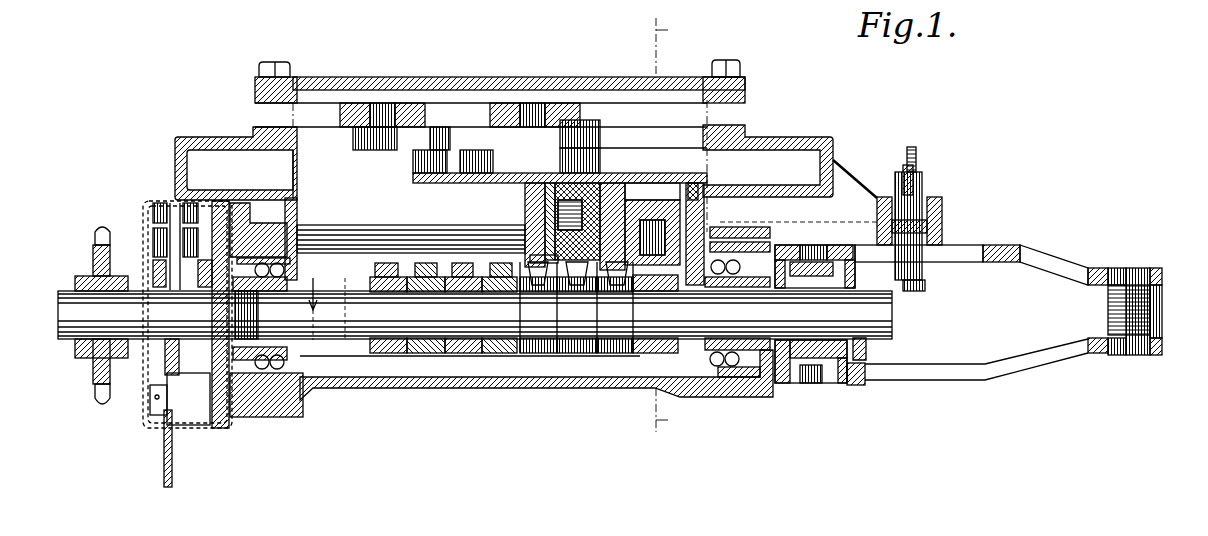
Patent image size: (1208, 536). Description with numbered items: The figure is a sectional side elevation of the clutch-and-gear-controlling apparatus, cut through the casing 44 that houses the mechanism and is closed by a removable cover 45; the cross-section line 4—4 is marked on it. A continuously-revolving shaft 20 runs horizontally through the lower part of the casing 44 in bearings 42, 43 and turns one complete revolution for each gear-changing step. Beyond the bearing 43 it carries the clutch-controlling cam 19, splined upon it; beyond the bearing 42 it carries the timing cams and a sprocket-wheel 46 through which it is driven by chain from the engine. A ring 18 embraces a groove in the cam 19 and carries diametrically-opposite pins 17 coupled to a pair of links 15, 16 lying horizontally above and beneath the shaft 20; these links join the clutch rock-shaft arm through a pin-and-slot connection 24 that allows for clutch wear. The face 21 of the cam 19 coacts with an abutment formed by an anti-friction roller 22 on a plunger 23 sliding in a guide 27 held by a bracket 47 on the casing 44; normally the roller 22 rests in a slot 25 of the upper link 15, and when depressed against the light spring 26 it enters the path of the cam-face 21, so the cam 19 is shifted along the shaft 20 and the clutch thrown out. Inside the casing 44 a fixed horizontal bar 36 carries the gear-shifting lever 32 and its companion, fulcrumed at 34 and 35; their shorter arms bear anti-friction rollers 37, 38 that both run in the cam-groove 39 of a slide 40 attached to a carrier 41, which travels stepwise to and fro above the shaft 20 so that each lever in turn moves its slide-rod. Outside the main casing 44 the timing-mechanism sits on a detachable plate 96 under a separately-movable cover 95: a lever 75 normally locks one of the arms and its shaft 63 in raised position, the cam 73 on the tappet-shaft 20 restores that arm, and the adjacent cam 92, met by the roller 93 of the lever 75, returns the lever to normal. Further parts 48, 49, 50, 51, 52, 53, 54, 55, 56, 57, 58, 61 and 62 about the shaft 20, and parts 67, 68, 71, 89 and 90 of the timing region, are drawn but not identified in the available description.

The section line 4— 4 is at (665, 221).
The link 15 is at (1085, 268).
The link 16 is at (1058, 362).
The pins 17 is at (812, 245).
The ring 18 is at (822, 383).
The clutch-controlling cam 19 is at (855, 380).
The continuously-revolving shaft 20 is at (70, 345).
The cam face 21 is at (868, 341).
The anti-friction roller 22 is at (920, 285).
The plunger 23 is at (912, 205).
The pin-and-slot connection 24 is at (1118, 268).
The slot 25 is at (963, 262).
The spring 26 is at (942, 226).
The guide 27 is at (942, 208).
The gear-shifting lever 32 is at (600, 138).
The fulcrum 34 is at (382, 103).
The fulcrum 35 is at (532, 103).
The fixed horizontal bar 36 is at (481, 137).
The anti-friction roller 37 is at (453, 150).
The anti-friction roller 38 is at (600, 161).
The cam-groove 39 is at (690, 160).
The slide 40 is at (447, 183).
The carrier 41 is at (545, 210).
The bearing 42 is at (282, 395).
The bearing 43 is at (725, 378).
The casing 44 is at (218, 137).
The removable cover 45 is at (463, 77).
The sprocket-wheel 46 is at (95, 257).
The bracket 47 is at (798, 181).
The gear 48 is at (388, 308).
The gear 49 is at (426, 308).
The gear 50 is at (463, 308).
The gear 51 is at (499, 308).
The clutch member 52 is at (538, 307).
The clutch member 53 is at (577, 307).
The clutch member 54 is at (615, 307).
The support column 55 is at (535, 183).
The block 56 is at (652, 224).
The member 57 is at (540, 258).
The support 58 is at (703, 250).
The block 61 is at (545, 222).
The gear 62 is at (655, 220).
The shaft 63 is at (320, 225).
The pin head 67 is at (917, 150).
The sleeve 68 is at (903, 170).
The gear 71 is at (191, 225).
The cam 73 is at (188, 399).
The lever 75 is at (162, 202).
The switch 89 is at (152, 405).
The rod 90 is at (172, 467).
The cam 92 is at (154, 272).
The anti-friction roller 93 is at (155, 236).
The cover 95 is at (150, 372).
The detachable plate 96 is at (222, 428).